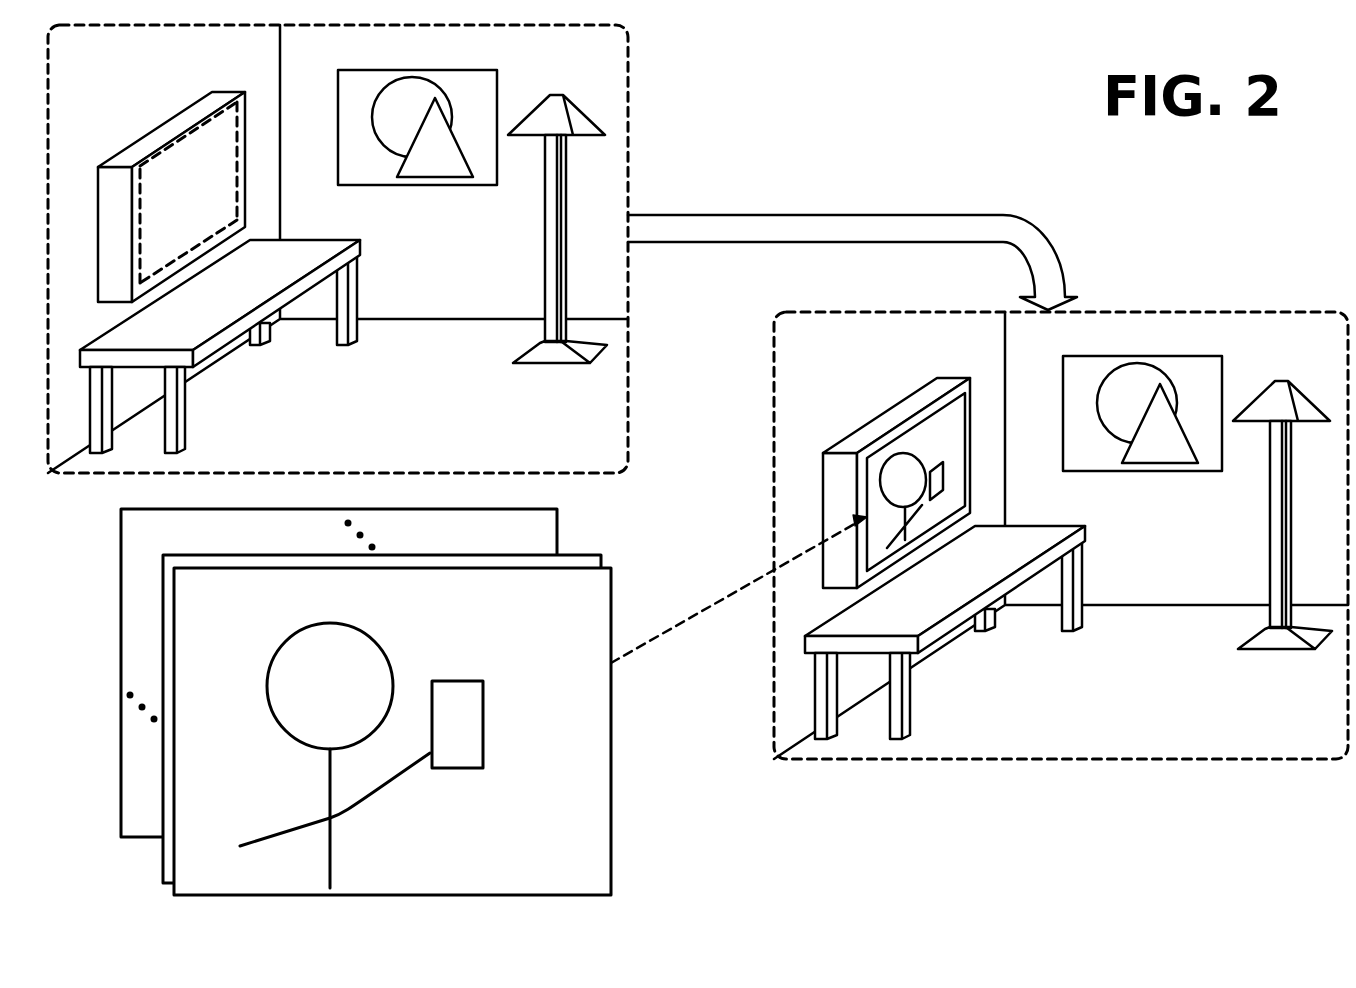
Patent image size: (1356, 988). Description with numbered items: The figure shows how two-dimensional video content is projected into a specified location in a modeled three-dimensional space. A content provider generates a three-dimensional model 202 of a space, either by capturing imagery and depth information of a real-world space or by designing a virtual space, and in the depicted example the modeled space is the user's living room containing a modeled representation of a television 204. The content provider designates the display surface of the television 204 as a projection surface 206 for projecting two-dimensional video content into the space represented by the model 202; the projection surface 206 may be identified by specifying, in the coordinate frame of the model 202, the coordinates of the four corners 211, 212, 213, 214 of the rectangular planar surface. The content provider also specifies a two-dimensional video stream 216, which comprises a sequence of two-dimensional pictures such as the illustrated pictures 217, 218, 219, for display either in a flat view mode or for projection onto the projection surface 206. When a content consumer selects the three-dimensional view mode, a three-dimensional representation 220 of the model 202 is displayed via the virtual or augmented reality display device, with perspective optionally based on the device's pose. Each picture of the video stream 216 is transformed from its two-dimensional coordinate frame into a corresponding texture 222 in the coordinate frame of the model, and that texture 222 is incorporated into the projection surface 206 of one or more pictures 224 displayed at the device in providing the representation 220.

The 3D model 202 is at (636, 58).
The television 204 is at (209, 172).
The projection surface 206 is at (218, 192).
The corner of the projection surface 211 is at (141, 165).
The corner of the projection surface 212 is at (237, 104).
The corner of the projection surface 213 is at (237, 218).
The corner of the projection surface 214 is at (145, 283).
The 2D video stream 216 is at (402, 727).
The 2D picture 217 is at (205, 897).
The 2D picture 218 is at (163, 886).
The 2D picture 219 is at (137, 838).
The 3D representation 220 is at (1061, 542).
The texture 222 is at (950, 443).
The picture 224 is at (1168, 762).